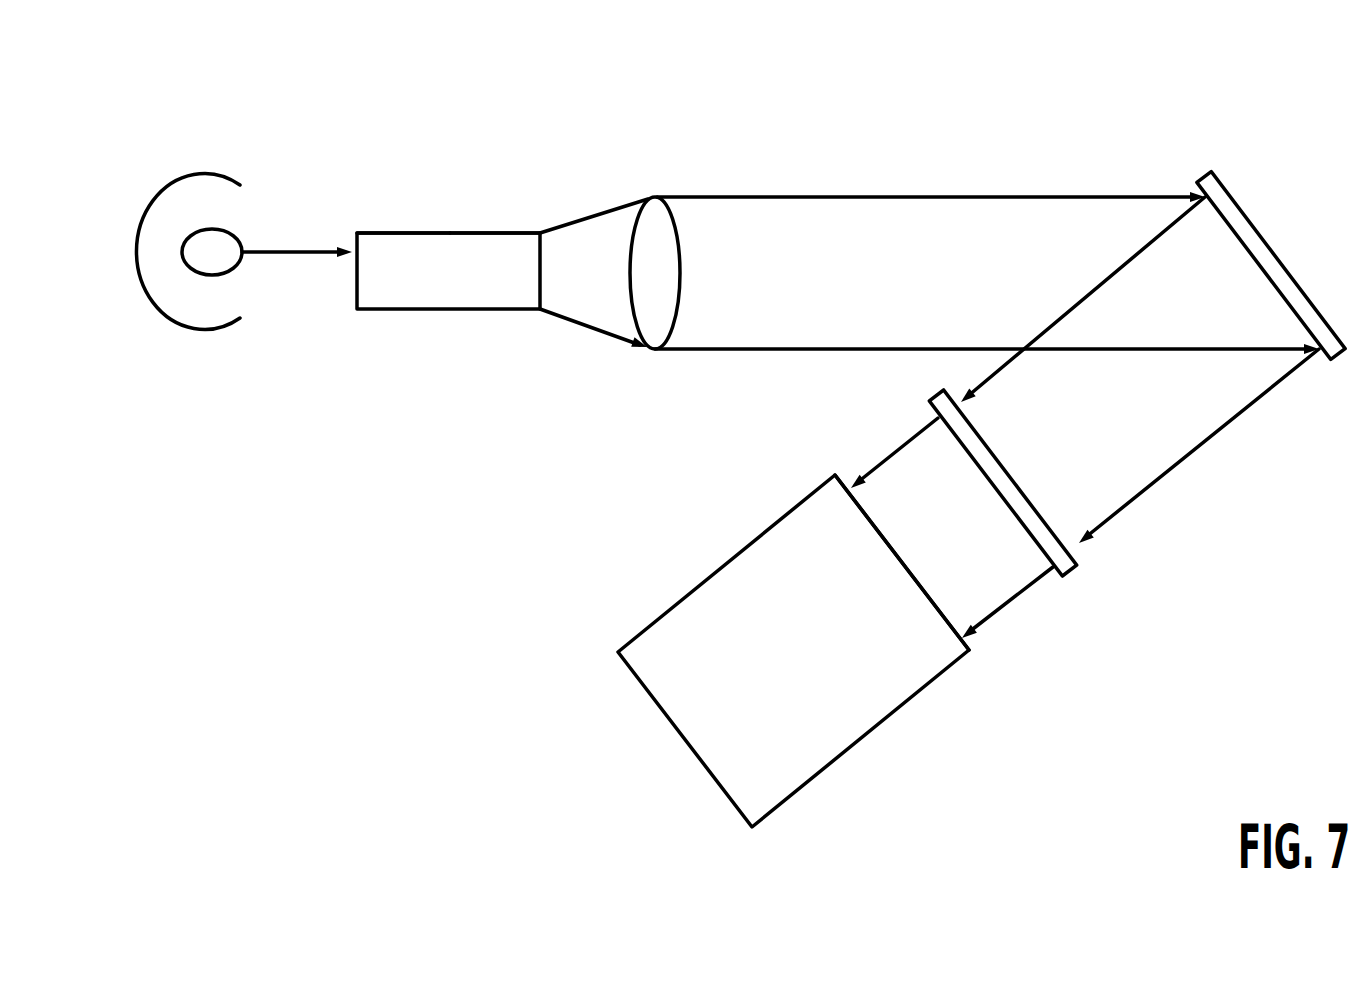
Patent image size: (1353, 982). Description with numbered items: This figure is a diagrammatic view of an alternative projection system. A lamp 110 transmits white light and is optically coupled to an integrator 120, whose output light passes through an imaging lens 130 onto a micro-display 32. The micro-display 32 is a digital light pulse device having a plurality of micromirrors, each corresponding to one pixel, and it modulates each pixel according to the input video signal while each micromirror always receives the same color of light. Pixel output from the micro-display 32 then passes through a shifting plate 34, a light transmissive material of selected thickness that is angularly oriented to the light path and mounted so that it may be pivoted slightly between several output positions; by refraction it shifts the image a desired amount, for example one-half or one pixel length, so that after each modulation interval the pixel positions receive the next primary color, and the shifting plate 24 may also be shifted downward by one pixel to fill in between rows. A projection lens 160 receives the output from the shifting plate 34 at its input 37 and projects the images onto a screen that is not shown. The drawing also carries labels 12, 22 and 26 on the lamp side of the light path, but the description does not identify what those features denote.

The lamp 110 is at (158, 357).
The reflector 12 is at (210, 175).
The light guide / coupling element 22 is at (356, 272).
The input face of light guide 26 is at (397, 232).
The integrator 120 is at (478, 232).
The shifting plate 24 is at (542, 272).
The imaging lens 130 is at (621, 280).
The micro-display 32 is at (1241, 182).
The shifting plate 34 is at (1095, 561).
The projection lens 160 is at (605, 635).
The input 37 is at (914, 569).